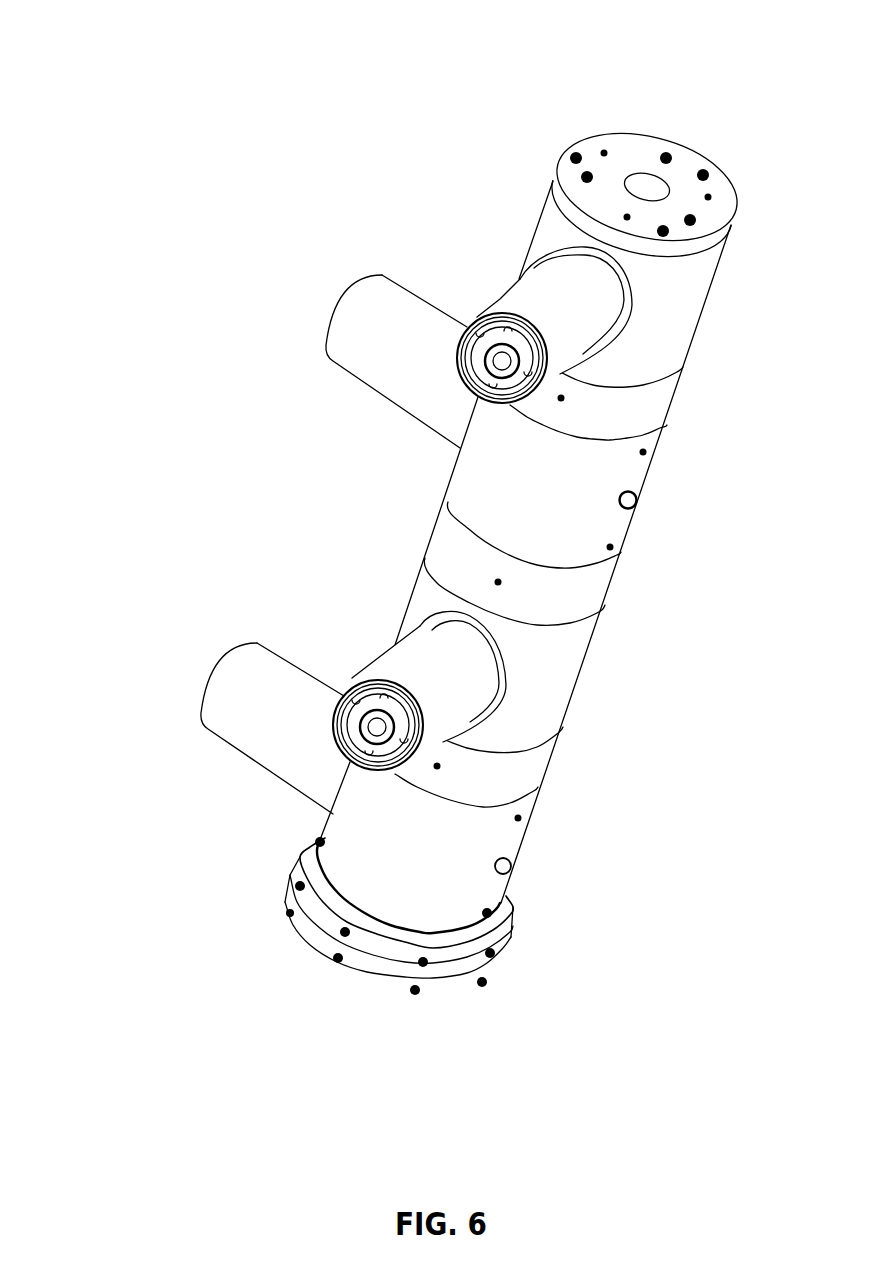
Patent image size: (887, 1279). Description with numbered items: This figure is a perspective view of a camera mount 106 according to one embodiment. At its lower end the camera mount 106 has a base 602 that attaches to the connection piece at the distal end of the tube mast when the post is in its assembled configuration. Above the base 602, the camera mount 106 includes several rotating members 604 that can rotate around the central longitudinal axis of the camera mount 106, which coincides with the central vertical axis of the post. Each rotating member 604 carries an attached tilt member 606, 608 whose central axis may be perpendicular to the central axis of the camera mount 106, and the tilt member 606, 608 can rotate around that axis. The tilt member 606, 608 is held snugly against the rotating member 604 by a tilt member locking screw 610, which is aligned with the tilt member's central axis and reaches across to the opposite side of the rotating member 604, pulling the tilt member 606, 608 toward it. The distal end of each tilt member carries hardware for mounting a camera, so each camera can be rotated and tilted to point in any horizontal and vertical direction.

The camera mount 106 is at (115, 111).
The base 602 is at (308, 898).
The rotating member 604 is at (560, 233).
The tilt member 606 is at (420, 649).
The tilt member 608 is at (473, 330).
The tilt member locking screw 610 is at (640, 508).